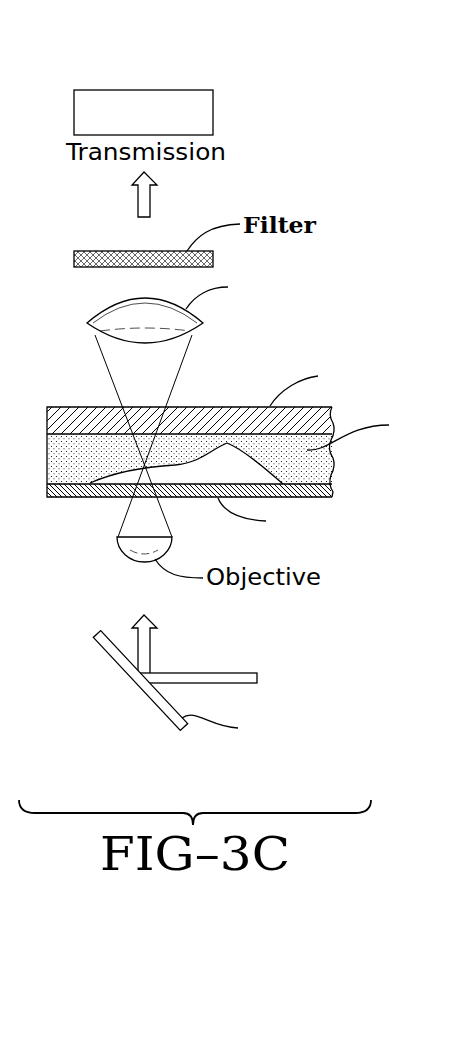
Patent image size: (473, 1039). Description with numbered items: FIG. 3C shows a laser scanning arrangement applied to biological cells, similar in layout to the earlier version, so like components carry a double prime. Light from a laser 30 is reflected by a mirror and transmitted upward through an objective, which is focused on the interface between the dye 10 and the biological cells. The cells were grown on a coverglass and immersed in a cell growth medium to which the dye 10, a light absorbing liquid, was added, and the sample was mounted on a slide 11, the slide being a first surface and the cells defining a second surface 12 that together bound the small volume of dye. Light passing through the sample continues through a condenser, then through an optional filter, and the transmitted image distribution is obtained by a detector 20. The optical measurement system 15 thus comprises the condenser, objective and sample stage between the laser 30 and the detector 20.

The detector 20 is at (181, 90).
The optical imaging system (condenser) 15 is at (73, 389).
The dye 10 is at (298, 468).
The slide 11 is at (90, 435).
The second surface 12 is at (227, 443).
The laser 30 is at (218, 637).